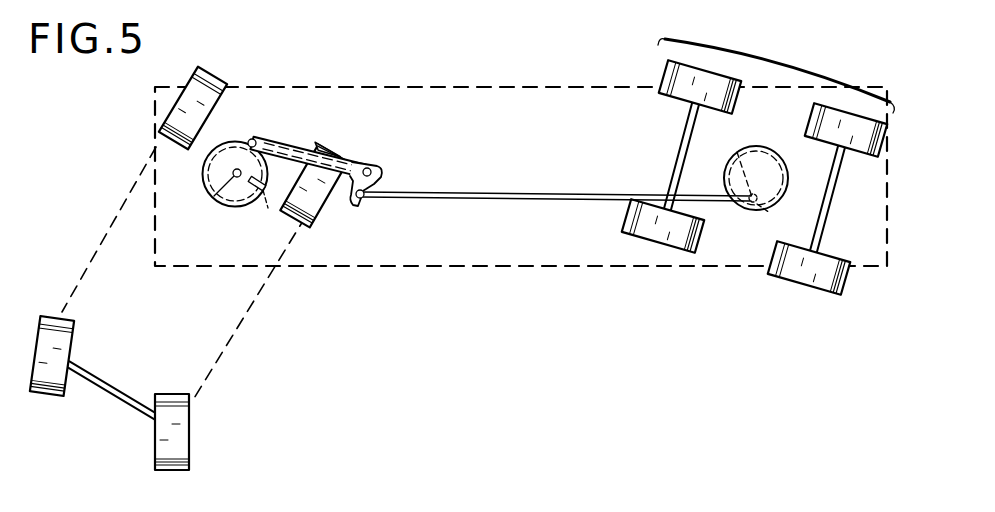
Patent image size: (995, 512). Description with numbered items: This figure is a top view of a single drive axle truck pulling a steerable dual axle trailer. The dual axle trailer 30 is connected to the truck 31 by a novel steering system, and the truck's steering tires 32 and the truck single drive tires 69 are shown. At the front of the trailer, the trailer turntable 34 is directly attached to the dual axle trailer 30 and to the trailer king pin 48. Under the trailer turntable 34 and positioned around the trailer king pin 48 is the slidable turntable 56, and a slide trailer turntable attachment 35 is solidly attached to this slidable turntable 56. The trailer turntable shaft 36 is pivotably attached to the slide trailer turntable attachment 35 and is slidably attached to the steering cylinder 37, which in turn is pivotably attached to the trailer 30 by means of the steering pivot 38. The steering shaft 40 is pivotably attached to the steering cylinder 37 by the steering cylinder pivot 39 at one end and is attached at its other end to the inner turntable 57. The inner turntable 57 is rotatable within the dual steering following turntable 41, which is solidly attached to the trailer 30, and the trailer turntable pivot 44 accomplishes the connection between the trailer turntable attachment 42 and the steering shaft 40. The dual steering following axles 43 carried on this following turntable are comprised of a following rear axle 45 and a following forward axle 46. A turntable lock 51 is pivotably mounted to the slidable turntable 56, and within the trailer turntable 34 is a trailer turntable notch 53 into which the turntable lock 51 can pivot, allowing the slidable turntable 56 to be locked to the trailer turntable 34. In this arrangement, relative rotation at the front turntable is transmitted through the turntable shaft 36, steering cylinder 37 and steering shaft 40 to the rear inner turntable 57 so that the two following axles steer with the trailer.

The dual axle trailer 30 is at (473, 271).
The truck 31 is at (241, 339).
The steering tires 32 is at (52, 395).
The trailer turntable 34 is at (229, 207).
The slide trailer turntable attachment 35 is at (253, 139).
The trailer turntable shaft 36 is at (281, 141).
The steering cylinder 37 is at (350, 150).
The steering pivot 38 is at (369, 166).
The steering cylinder pivot 39 is at (360, 201).
The steering shaft 40 is at (484, 191).
The dual steering following turntable 41 is at (762, 144).
The trailer turntable attachment 42 is at (771, 213).
The dual steering following axles 43 is at (778, 63).
The trailer turntable pivot 44 is at (738, 152).
The following rear axle 45 is at (836, 210).
The following forward axle 46 is at (677, 154).
The trailer king pin 48 is at (214, 196).
The turntable lock 51 is at (265, 192).
The trailer turntable notch 53 is at (250, 205).
The slidable turntable 56 is at (228, 141).
The inner turntable 57 is at (786, 168).
The single drive tires 69 is at (207, 68).